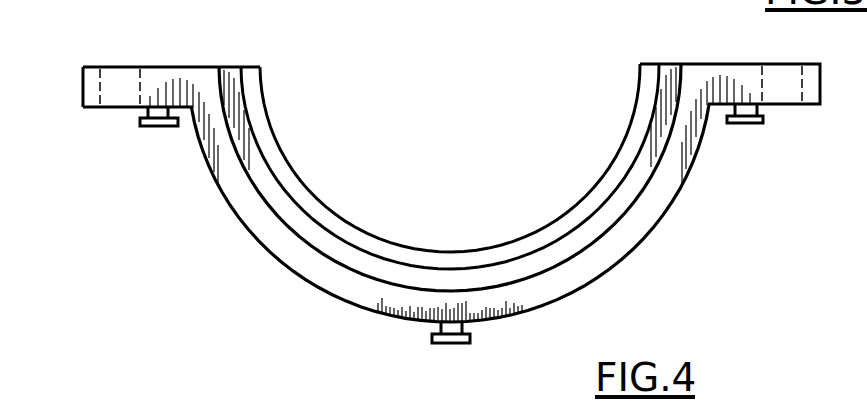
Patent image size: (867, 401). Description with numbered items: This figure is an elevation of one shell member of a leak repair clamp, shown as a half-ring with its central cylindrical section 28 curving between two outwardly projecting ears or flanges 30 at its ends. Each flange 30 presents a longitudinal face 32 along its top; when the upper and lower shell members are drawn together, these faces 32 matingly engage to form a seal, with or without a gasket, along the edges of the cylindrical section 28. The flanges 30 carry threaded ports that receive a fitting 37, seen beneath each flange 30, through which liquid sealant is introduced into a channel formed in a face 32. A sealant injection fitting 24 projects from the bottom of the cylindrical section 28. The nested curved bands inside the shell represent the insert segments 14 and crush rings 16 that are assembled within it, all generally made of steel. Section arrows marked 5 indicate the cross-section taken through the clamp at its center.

The insert segments 14 is at (240, 67).
The crush rings 16 is at (277, 132).
The central cylindrical section 28 is at (281, 262).
The longitudinal face 32 is at (160, 67).
The flanges 30 is at (83, 88).
The fitting 37 is at (163, 130).
The sealant injection fittings 24 is at (450, 346).
The section line 5- 5 is at (450, 68).